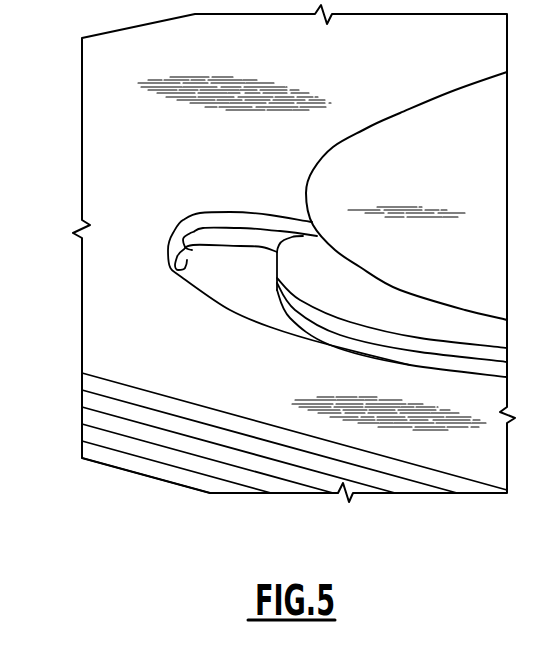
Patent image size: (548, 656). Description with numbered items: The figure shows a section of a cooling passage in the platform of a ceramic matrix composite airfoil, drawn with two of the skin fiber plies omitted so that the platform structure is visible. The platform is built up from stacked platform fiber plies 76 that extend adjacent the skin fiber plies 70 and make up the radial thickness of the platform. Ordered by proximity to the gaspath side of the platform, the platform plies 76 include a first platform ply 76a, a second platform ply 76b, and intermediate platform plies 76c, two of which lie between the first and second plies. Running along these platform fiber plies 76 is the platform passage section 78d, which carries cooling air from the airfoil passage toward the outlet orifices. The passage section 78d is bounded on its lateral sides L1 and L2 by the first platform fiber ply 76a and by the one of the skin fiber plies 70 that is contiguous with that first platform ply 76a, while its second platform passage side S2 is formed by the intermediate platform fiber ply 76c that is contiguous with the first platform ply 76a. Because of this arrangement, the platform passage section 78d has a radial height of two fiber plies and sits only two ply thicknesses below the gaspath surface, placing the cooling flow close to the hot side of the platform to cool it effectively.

The skin fiber plies 70 is at (90, 377).
The platform fiber plies 76 is at (70, 387).
The first platform ply 76a is at (180, 279).
The second platform ply 76b is at (167, 477).
The intermediate platform ply 76c is at (208, 288).
The platform passage section 78d is at (257, 323).
The lateral side L1 is at (203, 240).
The lateral side L2 is at (285, 280).
The second platform passage side S2 is at (243, 267).